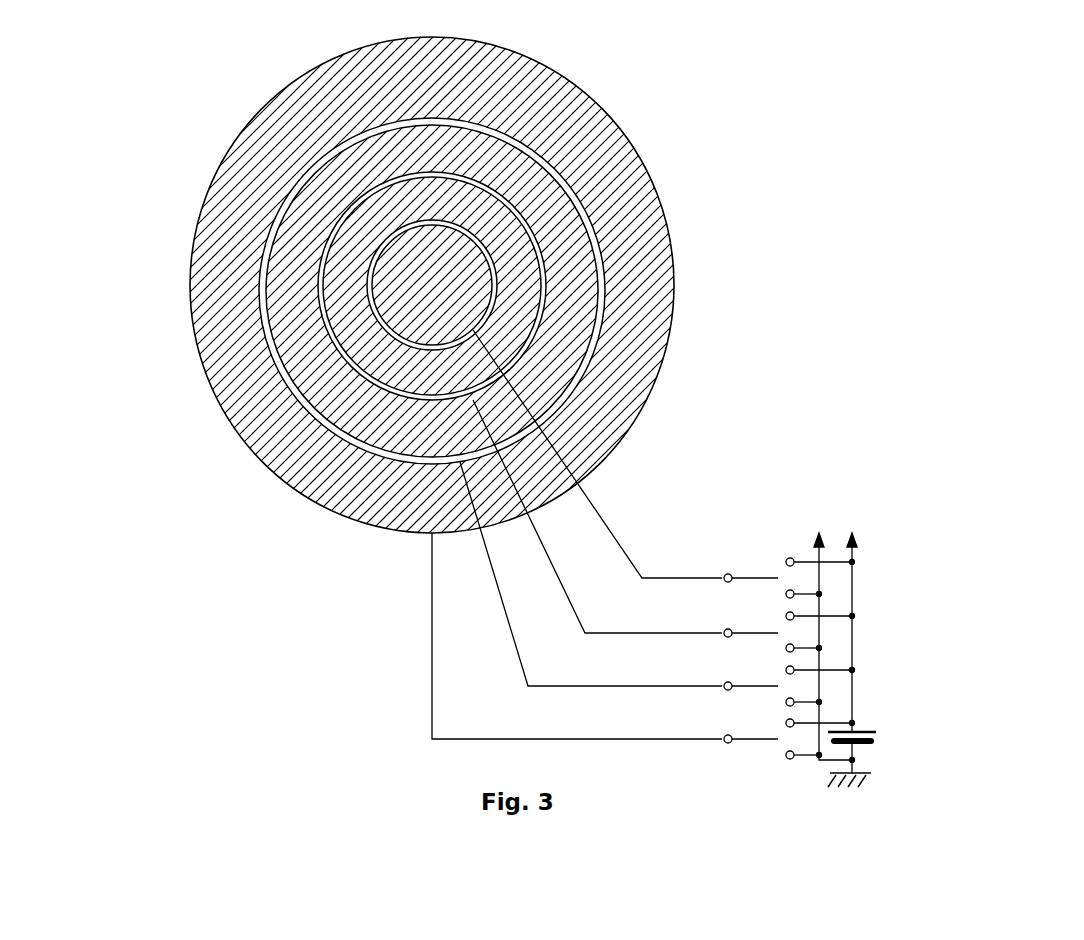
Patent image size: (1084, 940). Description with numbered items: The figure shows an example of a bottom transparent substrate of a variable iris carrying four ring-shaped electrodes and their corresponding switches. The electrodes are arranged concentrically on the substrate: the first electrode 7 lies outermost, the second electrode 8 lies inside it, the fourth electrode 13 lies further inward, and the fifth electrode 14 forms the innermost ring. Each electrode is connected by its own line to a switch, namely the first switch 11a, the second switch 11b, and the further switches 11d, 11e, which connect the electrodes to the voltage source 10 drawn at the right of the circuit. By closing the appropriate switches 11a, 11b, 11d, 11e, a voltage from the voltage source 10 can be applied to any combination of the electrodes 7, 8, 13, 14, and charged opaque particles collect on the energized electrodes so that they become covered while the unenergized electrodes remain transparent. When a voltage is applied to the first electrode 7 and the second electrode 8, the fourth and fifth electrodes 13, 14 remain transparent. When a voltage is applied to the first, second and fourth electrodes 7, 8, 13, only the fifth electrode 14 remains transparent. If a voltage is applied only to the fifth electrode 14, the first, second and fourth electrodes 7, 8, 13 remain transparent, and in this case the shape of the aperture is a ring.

The first electrode 7 is at (200, 352).
The second electrode 8 is at (293, 392).
The fourth electrode 13 is at (322, 320).
The fifth electrode 14 is at (375, 284).
The first switch 11a is at (752, 567).
The second switch 11b is at (820, 605).
The switch 11d is at (820, 686).
The switch 11e is at (820, 739).
The voltage source 10 is at (870, 726).